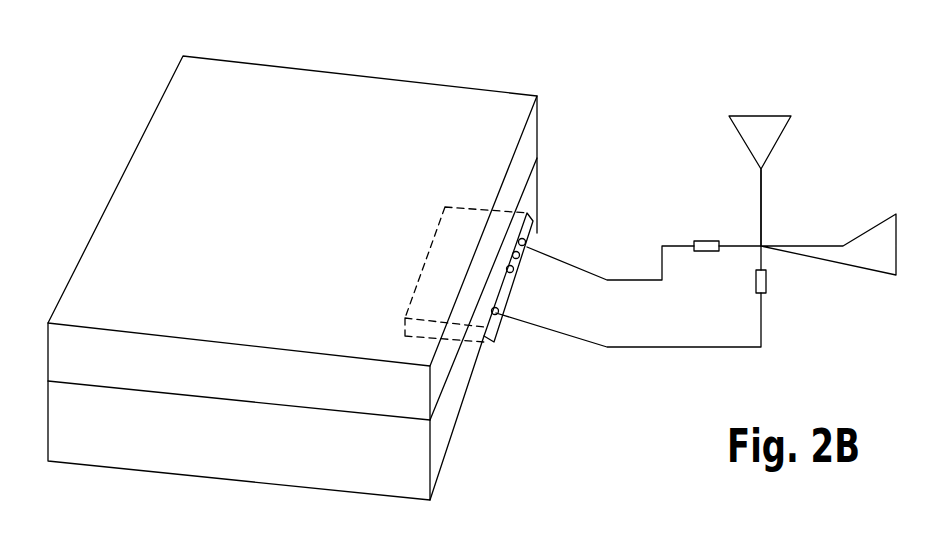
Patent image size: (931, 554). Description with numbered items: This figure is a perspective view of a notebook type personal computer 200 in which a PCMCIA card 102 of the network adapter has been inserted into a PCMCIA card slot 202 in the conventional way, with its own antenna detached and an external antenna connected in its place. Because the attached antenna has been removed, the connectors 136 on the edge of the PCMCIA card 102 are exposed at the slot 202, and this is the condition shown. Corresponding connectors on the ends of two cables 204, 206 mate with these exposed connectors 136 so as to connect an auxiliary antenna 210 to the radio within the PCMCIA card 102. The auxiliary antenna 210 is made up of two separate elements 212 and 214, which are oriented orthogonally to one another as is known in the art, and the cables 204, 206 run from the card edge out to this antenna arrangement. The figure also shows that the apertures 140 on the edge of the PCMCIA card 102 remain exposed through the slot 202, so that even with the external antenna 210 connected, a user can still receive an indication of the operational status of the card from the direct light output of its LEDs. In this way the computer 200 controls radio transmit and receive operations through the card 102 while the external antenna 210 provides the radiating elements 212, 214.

The notebook type personal computer 200 is at (170, 115).
The PCMCIA card 102 is at (452, 214).
The apertures 140 is at (508, 270).
The connectors 136 is at (527, 242).
The PCMCIA card slot 202 is at (488, 344).
The cable 204 is at (665, 242).
The cable 206 is at (652, 348).
The auxiliary antenna 210 is at (815, 139).
The antenna element 212 is at (762, 200).
The antenna element 214 is at (778, 249).